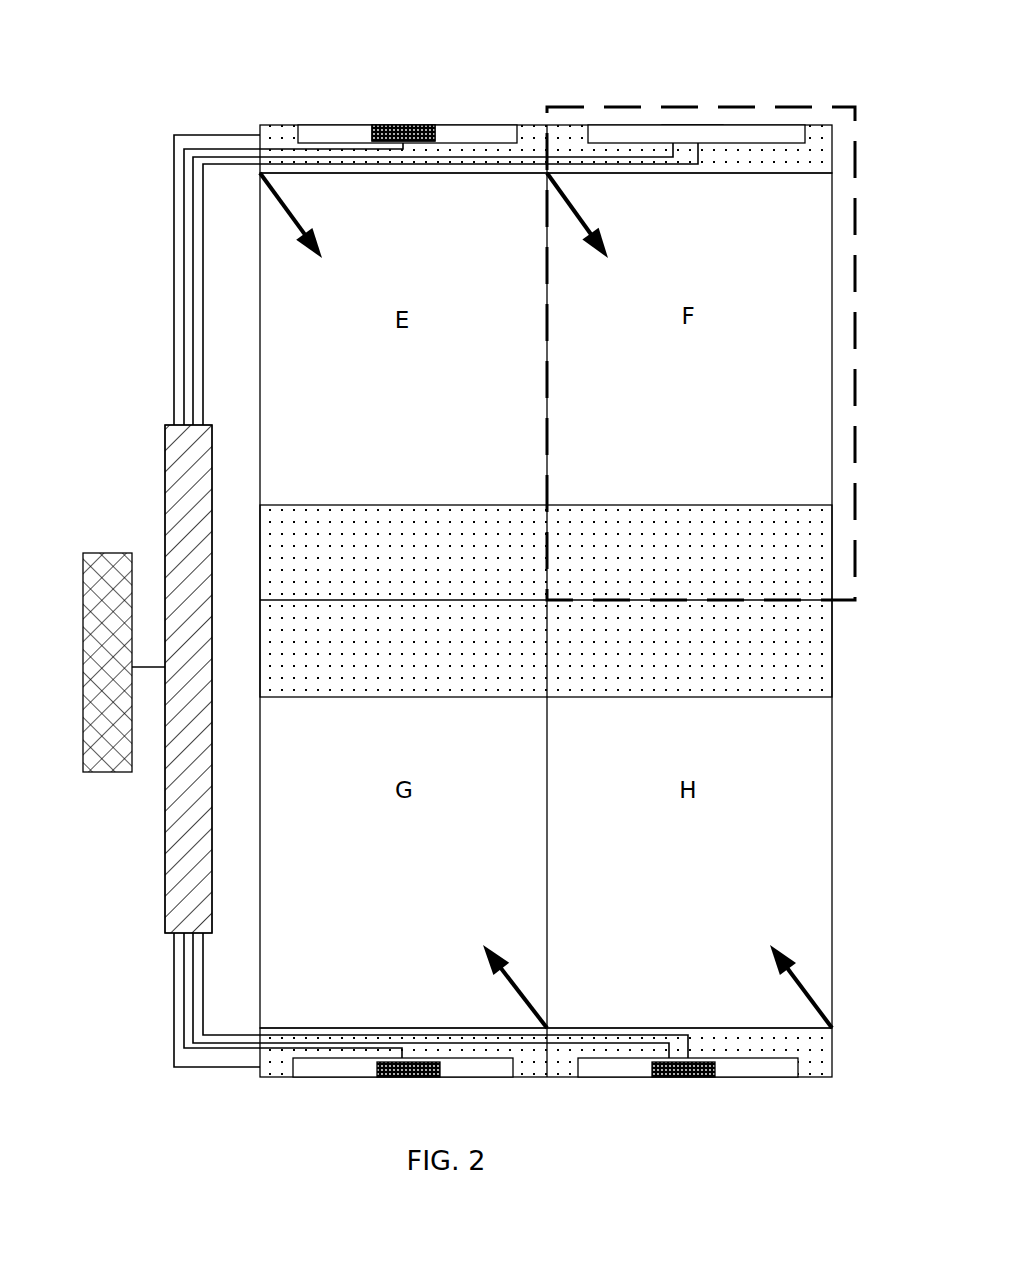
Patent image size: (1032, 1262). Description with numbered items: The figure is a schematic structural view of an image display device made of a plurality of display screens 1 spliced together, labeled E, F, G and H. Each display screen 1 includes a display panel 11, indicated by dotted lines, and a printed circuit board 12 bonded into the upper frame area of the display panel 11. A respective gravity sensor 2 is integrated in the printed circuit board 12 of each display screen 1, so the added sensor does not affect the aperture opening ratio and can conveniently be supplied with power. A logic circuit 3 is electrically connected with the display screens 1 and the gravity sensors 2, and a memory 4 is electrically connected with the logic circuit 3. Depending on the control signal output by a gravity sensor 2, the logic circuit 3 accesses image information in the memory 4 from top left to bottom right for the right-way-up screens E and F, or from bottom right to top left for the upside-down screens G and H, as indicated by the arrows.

The display screen 1 is at (732, 57).
The display panel 11 is at (720, 336).
The printed circuit board 12 is at (696, 108).
The gravity sensor 2 is at (431, 108).
The logic circuit 3 is at (160, 655).
The memory 4 is at (94, 624).